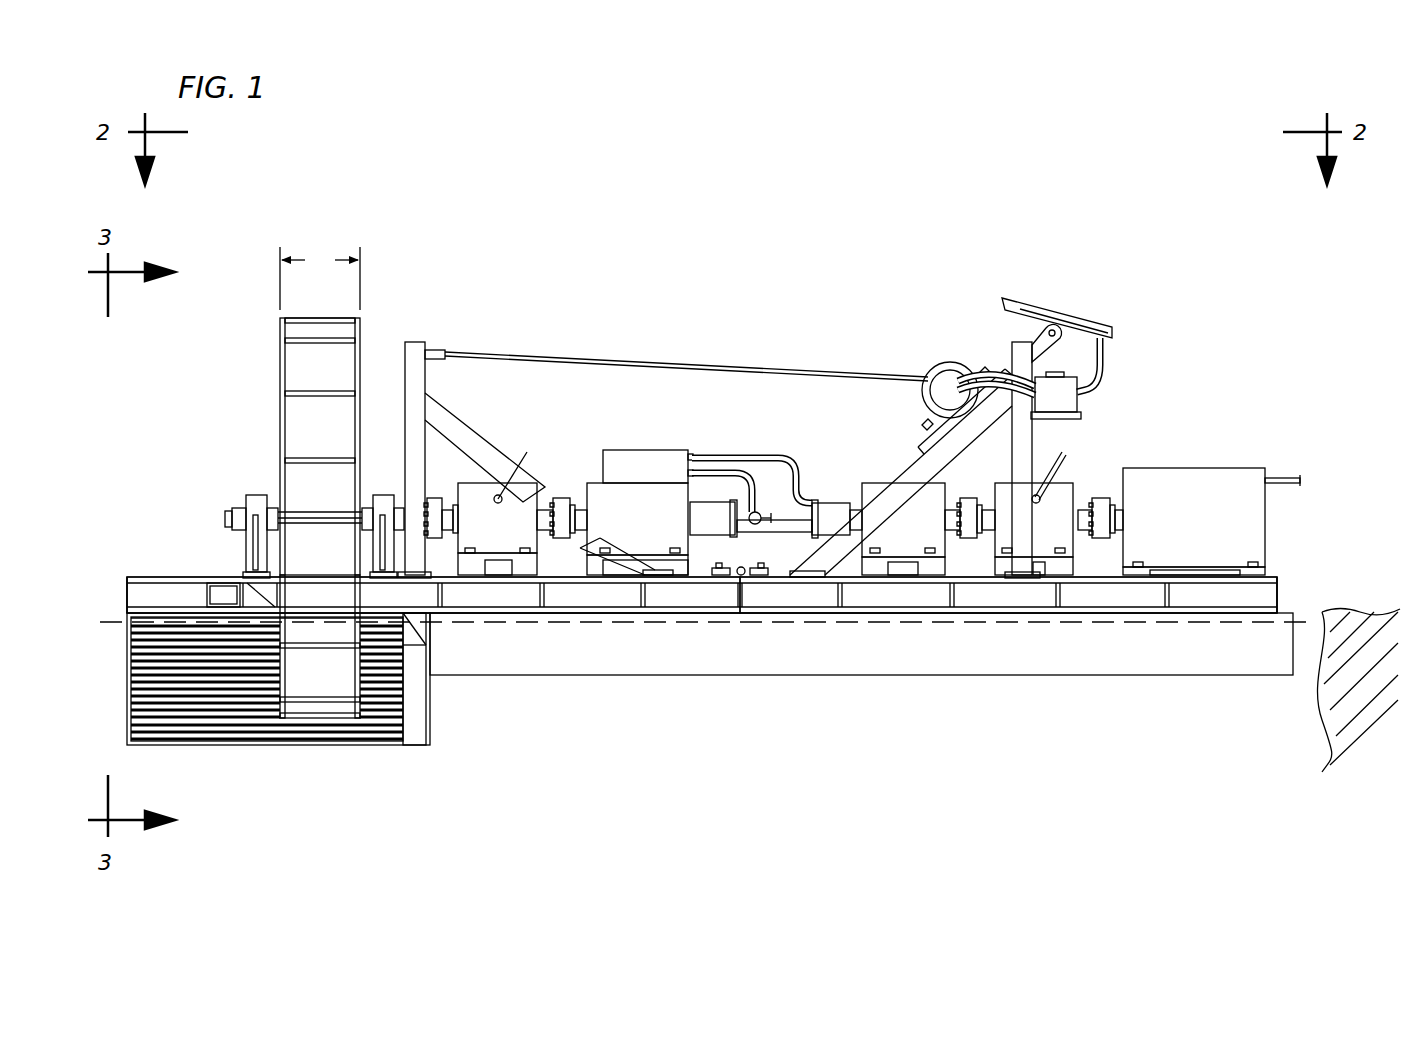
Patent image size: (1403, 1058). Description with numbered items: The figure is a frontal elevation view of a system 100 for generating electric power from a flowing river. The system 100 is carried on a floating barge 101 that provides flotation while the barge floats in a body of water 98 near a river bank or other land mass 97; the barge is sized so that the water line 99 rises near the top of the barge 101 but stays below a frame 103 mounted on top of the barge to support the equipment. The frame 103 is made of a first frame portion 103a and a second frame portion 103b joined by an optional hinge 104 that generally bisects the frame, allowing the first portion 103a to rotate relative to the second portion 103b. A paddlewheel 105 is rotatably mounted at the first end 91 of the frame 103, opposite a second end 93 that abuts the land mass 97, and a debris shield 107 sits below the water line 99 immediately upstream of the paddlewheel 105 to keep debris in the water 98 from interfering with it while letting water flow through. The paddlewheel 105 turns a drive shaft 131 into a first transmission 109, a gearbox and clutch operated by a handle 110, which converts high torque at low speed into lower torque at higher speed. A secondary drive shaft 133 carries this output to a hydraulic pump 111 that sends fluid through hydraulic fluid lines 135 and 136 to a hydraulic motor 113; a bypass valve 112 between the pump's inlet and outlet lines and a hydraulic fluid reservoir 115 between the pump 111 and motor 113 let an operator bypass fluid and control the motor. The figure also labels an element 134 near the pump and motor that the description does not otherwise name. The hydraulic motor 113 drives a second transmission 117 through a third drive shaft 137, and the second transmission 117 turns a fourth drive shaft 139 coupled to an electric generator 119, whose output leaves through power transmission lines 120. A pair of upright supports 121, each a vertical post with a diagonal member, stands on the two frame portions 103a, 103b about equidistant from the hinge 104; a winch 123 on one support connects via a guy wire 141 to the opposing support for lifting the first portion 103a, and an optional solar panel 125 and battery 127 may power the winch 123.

The first end 91 is at (127, 580).
The second end 93 is at (1280, 593).
The land mass 97 is at (1397, 610).
The body of water 98 is at (909, 744).
The water line 99 is at (103, 620).
The system 100 is at (348, 203).
The floating barge 101 is at (787, 670).
The frame 103 is at (790, 620).
The first frame portion 103a is at (588, 602).
The second frame portion 103b is at (897, 602).
The hinge 104 is at (742, 566).
The paddlewheel 105 is at (280, 330).
The debris shield 107 is at (220, 742).
The first transmission 109 is at (497, 529).
The handle 110 is at (525, 490).
The hydraulic pump 111 is at (662, 529).
The bypass valve 112 is at (763, 515).
The hydraulic motor 113 is at (903, 529).
The hydraulic fluid reservoir 115 is at (648, 466).
The second transmission 117 is at (1063, 540).
The electric generator 119 is at (1194, 521).
The power transmission lines 120 is at (1285, 478).
The upright support 121 is at (420, 345).
The winch 123 is at (937, 372).
The solar panel 125 is at (1055, 305).
The battery 127 is at (1080, 402).
The drive shaft 131 is at (432, 508).
The secondary drive shaft 133 is at (578, 505).
The drive shaft 134 is at (802, 532).
The hydraulic fluid line 135 is at (728, 470).
The hydraulic fluid line 136 is at (780, 458).
The third drive shaft 137 is at (987, 542).
The fourth drive shaft 139 is at (1110, 495).
The guy wire 141 is at (625, 365).